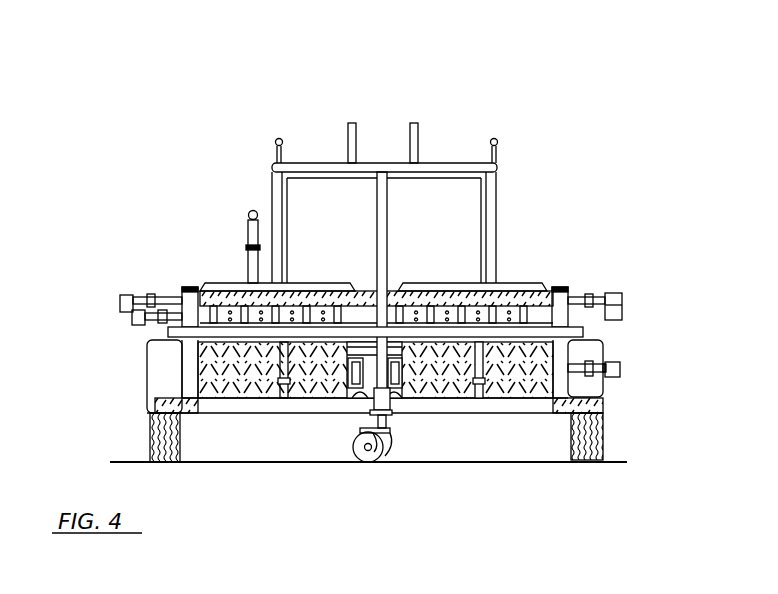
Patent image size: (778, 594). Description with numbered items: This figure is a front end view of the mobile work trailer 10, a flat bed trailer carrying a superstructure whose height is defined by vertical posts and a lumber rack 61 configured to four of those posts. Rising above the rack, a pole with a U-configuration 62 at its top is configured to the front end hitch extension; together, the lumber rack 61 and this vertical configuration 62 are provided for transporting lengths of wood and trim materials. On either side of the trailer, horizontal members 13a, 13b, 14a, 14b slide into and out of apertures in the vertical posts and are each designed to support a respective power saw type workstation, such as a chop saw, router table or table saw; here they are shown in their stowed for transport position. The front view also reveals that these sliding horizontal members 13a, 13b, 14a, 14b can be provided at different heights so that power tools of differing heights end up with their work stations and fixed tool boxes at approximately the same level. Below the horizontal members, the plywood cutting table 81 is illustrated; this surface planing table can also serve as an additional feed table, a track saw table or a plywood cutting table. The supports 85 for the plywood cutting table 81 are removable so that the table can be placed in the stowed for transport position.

The mobile work trailer 10 is at (622, 103).
The lumber rack 61 is at (300, 163).
The pole with a U-configuration 62 is at (419, 130).
The horizontal member 14b is at (120, 298).
The horizontal member 13b is at (132, 316).
The horizontal member 14a is at (622, 300).
The horizontal member 13a is at (622, 368).
The plywood cutting table 81 is at (583, 331).
The supports 85 is at (497, 380).